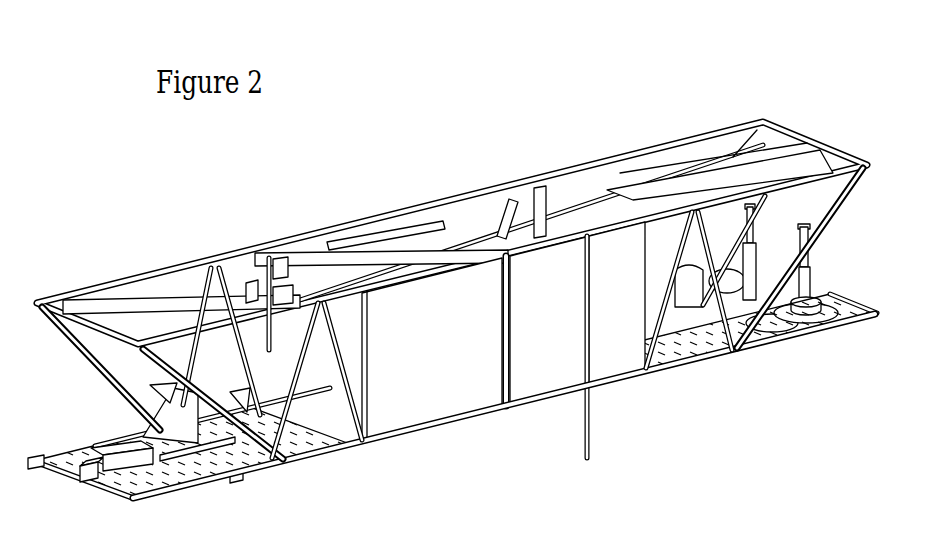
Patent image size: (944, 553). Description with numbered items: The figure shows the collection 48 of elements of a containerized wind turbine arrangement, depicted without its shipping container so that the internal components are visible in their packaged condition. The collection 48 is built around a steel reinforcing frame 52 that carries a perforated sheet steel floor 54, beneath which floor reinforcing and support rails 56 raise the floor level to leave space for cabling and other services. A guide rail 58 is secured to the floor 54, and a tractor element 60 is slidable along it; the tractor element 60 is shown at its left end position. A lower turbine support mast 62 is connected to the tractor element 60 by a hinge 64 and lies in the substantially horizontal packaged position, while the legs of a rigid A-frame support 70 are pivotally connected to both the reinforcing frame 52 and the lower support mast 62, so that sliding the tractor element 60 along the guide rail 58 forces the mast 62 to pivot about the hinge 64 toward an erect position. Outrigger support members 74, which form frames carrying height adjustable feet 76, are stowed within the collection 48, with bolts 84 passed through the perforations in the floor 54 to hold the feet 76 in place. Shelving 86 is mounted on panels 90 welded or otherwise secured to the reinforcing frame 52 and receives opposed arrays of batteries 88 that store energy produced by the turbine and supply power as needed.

The collection of elements 48 is at (722, 111).
The steel reinforcing frame 52 is at (223, 252).
The perforated sheet steel floor 54 is at (112, 488).
The floor reinforcing and support rails 56 is at (83, 483).
The guide rail 58 is at (188, 448).
The tractor element 60 is at (108, 447).
The lower turbine support mast 62 is at (680, 307).
The hinge 64 is at (143, 430).
The A-frame support 70 is at (253, 290).
The support members 74 is at (450, 227).
The height adjustable feet 76 is at (827, 316).
The bolts 84 is at (808, 323).
The shelving 86 is at (553, 198).
The batteries 88 is at (300, 247).
The panels 90 is at (430, 390).